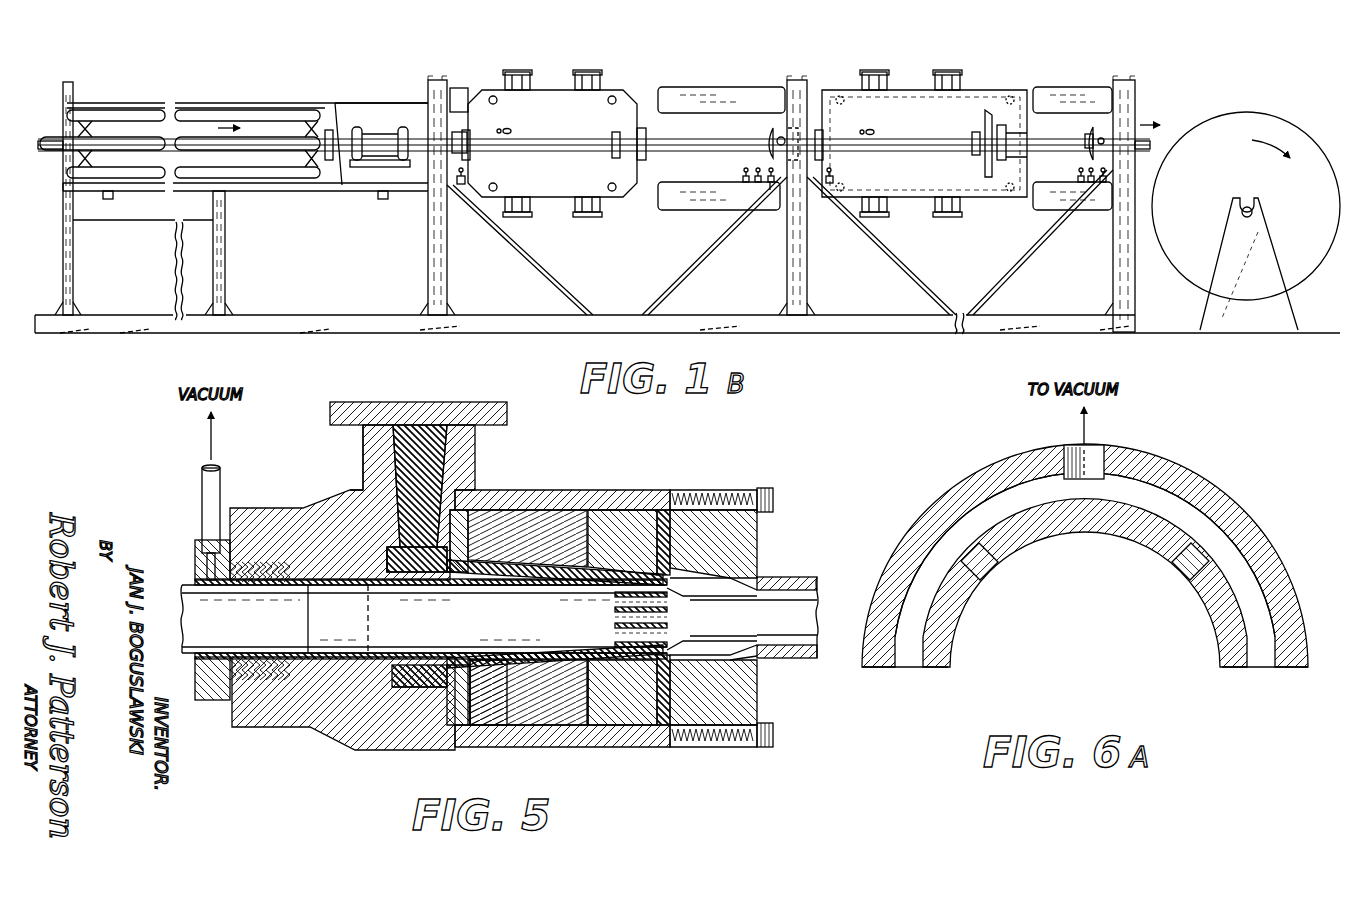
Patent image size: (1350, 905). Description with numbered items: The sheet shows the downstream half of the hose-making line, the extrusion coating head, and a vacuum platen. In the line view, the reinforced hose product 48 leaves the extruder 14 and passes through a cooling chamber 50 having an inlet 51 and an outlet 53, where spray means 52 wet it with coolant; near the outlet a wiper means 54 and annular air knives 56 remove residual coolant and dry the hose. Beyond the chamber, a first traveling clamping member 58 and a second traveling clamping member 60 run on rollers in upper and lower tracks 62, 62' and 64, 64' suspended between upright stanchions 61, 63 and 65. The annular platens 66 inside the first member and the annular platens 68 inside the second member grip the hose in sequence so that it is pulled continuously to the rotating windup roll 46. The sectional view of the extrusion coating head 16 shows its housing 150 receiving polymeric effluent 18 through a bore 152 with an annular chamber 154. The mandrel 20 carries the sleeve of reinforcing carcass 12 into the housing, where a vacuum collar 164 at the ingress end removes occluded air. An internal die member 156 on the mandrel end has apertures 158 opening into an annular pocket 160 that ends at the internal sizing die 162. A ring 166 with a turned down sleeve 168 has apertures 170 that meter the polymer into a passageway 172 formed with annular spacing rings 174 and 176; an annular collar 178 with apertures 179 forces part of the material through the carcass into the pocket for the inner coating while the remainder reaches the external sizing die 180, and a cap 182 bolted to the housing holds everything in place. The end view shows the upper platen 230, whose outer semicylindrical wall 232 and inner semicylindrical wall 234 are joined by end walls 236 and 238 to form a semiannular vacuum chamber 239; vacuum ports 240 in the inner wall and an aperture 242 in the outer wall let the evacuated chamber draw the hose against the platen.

In FIG. 5, the sleeve of reinforcing carcass 12 is at (188, 582).
In FIG. 5, the extruder 14 is at (508, 414).
In FIG. 5, the extrusion coating head 16 is at (290, 503).
In FIG. 5, the polymeric effluent 18 is at (410, 415).
In FIG. 5, the mandrel 20 is at (242, 620).
In FIG. 1B, the windup roll 46 is at (1204, 216).
In FIG. 1B, the reinforced hose product 48 is at (50, 155).
In FIG. 5, the reinforced hose product 48 is at (802, 578).
In FIG. 1B, the cooling chamber 50 is at (236, 95).
In FIG. 1B, the inlet 51 is at (62, 134).
In FIG. 1B, the spray means 52 is at (128, 170).
In FIG. 1B, the outlet 53 is at (425, 133).
In FIG. 1B, the wiper means 54 is at (341, 120).
In FIG. 1B, the annular air knives 56 is at (403, 128).
In FIG. 1B, the first traveling clamping member 58 is at (605, 88).
In FIG. 1B, the second traveling clamping member 60 is at (903, 88).
In FIG. 1B, the upright stanchion 61 is at (440, 80).
In FIG. 1B, the upper track 62 is at (721, 83).
In FIG. 1B, the lower track 62' is at (718, 215).
In FIG. 1B, the upright stanchion 63 is at (797, 80).
In FIG. 1B, the upper track 64 is at (1072, 79).
In FIG. 1B, the lower track 64' is at (1047, 215).
In FIG. 1B, the upright stanchion 65 is at (1124, 80).
In FIG. 1B, the annular platens 66 is at (644, 122).
In FIG. 1B, the annular platens 68 is at (1010, 131).
In FIG. 5, the housing 150 is at (662, 490).
In FIG. 5, the bore 152 is at (402, 519).
In FIG. 5, the annular chamber 154 is at (413, 690).
In FIG. 5, the internal die member 156 is at (520, 620).
In FIG. 5, the apertures 158 is at (616, 628).
In FIG. 5, the annular pocket 160 is at (690, 639).
In FIG. 5, the internal sizing die 162 is at (745, 634).
In FIG. 5, the vacuum collar 164 is at (205, 701).
In FIG. 5, the ring 166 is at (465, 725).
In FIG. 5, the turned down sleeve 168 is at (548, 581).
In FIG. 5, the apertures 170 is at (453, 567).
In FIG. 5, the passageway 172 is at (612, 670).
In FIG. 5, the annular spacing ring 174 is at (520, 520).
In FIG. 5, the annular spacing ring 176 is at (610, 512).
In FIG. 5, the annular collar 178 is at (665, 700).
In FIG. 5, the apertures 179 is at (664, 574).
In FIG. 5, the external sizing die 180 is at (695, 522).
In FIG. 5, the cap 182 is at (758, 531).
In FIG. 6A, the upper platen 230 is at (948, 481).
In FIG. 6A, the outer semicylindrical wall 232 is at (1233, 500).
In FIG. 6A, the inner semicylindrical wall 234 is at (961, 615).
In FIG. 6A, the end wall 236 is at (908, 667).
In FIG. 6A, the end wall 238 is at (1268, 667).
In FIG. 6A, the semiannular vacuum chamber 239 is at (997, 511).
In FIG. 6A, the vacuum ports 240 is at (1193, 562).
In FIG. 6A, the aperture 242 is at (1094, 455).